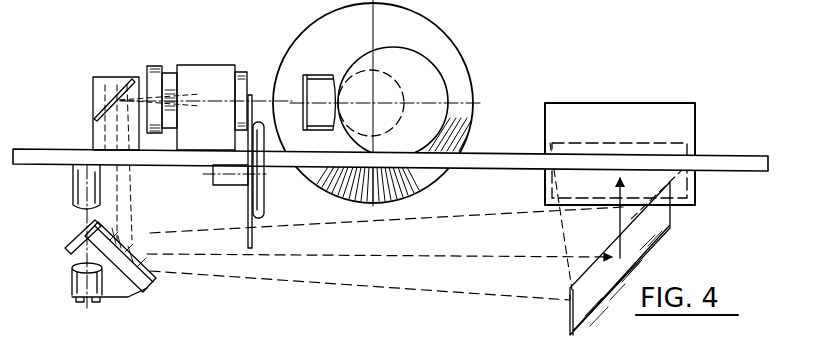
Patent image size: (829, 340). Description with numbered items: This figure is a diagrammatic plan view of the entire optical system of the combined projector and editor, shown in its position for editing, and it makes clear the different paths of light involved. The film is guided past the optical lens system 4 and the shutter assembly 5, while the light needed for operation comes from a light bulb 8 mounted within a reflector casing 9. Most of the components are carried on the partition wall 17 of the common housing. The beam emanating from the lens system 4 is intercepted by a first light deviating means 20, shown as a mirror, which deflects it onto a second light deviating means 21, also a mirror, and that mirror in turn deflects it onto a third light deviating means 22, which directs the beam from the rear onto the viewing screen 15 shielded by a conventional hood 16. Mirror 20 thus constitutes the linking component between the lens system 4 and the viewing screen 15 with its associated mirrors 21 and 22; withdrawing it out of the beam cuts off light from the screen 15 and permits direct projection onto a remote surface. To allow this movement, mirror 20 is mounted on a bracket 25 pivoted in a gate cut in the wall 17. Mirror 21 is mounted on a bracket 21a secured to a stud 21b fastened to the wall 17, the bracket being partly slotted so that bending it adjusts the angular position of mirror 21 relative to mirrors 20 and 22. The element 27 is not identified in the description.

The optical lens system 4 is at (211, 61).
The shutter assembly 5 is at (260, 88).
The light bulb 8 is at (388, 76).
The reflector casing 9 is at (438, 51).
The viewing screen 15 is at (585, 142).
The hood 16 is at (688, 125).
The partition wall 17 is at (735, 161).
The light deviating means 20 is at (120, 100).
The light deviating means 21 is at (152, 289).
The bracket 21a is at (80, 250).
The stud 21b is at (78, 283).
The light deviating means 22 is at (667, 230).
The bracket 25 is at (100, 128).
The support cylinder 27 is at (72, 165).